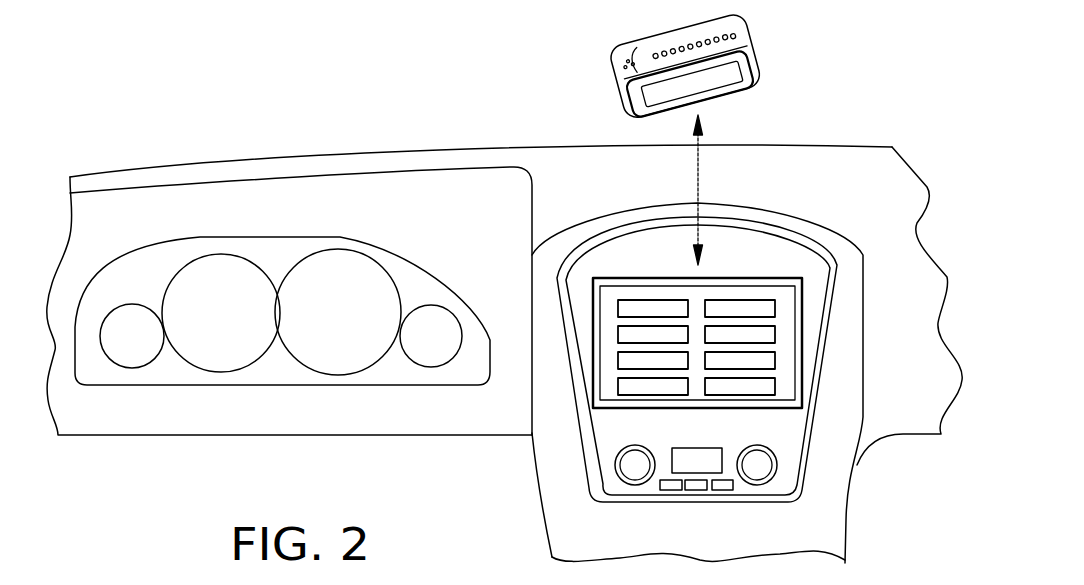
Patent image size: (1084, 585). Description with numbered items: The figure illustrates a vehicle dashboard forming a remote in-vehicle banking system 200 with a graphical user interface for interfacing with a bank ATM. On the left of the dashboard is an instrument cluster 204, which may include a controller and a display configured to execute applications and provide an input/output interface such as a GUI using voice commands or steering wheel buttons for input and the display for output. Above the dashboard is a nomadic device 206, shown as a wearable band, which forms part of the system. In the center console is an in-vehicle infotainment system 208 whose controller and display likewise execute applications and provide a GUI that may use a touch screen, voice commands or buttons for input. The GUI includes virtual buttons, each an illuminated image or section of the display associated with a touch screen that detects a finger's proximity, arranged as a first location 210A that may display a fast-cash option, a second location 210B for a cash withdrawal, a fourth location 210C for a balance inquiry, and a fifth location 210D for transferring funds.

The remote in-vehicle banking system 200 is at (822, 50).
The instrument cluster 204 is at (218, 195).
The nomadic device 206 is at (615, 88).
The in-vehicle infotainment system 208 is at (655, 277).
The first location 210A is at (617, 305).
The second location 210B is at (617, 333).
The fourth location 210C is at (617, 358).
The fifth location 210D is at (617, 386).